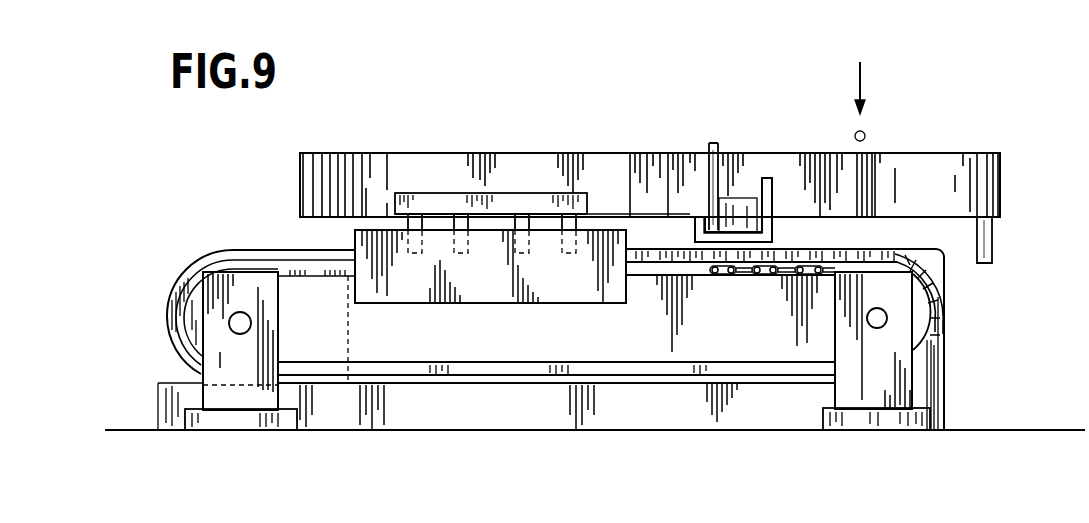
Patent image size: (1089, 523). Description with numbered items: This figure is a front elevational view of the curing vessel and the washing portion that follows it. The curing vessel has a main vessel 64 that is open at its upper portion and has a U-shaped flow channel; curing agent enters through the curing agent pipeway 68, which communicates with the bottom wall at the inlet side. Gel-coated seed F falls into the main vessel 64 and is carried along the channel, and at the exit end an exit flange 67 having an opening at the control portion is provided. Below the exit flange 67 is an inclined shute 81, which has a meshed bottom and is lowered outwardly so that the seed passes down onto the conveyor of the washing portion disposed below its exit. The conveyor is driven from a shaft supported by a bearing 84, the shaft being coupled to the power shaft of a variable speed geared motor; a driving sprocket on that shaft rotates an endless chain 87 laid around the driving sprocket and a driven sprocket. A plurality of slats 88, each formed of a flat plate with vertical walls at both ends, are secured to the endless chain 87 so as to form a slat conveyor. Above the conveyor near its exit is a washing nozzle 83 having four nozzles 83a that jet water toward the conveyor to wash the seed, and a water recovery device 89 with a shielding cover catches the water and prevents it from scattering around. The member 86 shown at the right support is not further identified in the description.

The main vessel 64 is at (966, 164).
The exit flange 67 is at (718, 136).
The curing agent pipeway 68 is at (994, 250).
The inclined shute 81 is at (747, 223).
The washing nozzle 83 is at (535, 192).
The nozzles 83a is at (431, 219).
The bearing 84 is at (220, 354).
The right support pillar 86 is at (895, 370).
The endless chain 87 is at (737, 276).
The slats 88 is at (945, 302).
The water recovery device 89 is at (563, 303).
The gel-coated seed F is at (865, 133).